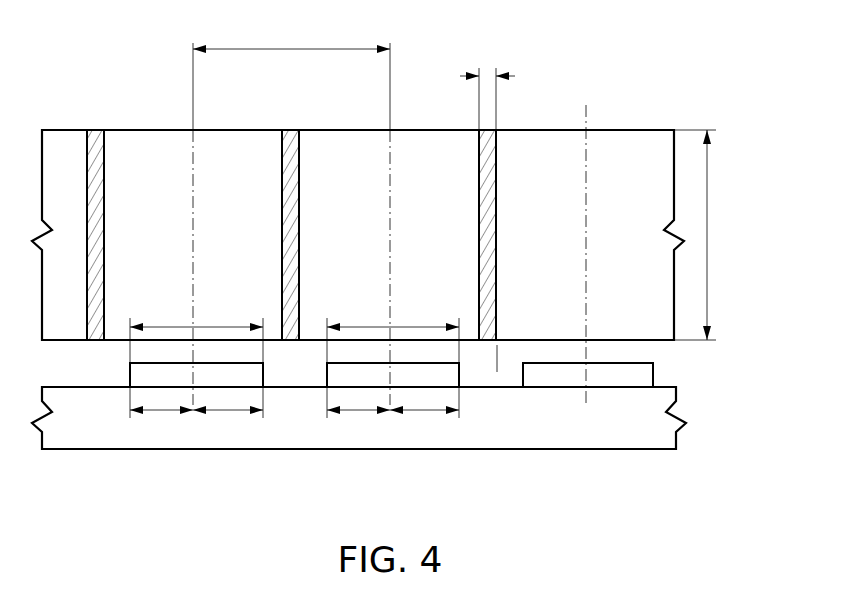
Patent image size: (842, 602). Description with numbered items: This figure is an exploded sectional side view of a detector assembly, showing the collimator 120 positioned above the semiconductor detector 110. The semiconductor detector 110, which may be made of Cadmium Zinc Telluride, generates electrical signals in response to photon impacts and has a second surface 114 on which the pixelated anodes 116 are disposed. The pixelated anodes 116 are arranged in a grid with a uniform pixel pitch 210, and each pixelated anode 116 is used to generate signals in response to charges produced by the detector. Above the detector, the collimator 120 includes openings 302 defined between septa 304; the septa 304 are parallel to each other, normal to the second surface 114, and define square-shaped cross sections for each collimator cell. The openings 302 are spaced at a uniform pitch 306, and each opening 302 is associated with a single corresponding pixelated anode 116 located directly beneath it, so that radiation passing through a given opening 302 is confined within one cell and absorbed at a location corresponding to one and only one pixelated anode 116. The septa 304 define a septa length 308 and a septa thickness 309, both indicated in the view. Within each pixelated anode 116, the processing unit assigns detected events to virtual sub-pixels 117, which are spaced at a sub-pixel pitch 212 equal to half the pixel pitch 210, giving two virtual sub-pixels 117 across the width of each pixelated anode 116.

The semiconductor detector 110 is at (580, 451).
The second surface 114 is at (498, 360).
The pixelated anodes 116 is at (418, 325).
The virtual sub-pixels 117 is at (143, 376).
The collimator 120 is at (546, 129).
The pixel pitch 210 is at (222, 325).
The sub-pixel pitch 212 is at (165, 421).
The openings 302 is at (172, 120).
The septa 304 is at (105, 232).
The pitch 306 is at (294, 51).
The septa length 308 is at (709, 232).
The septa thickness 309 is at (488, 73).